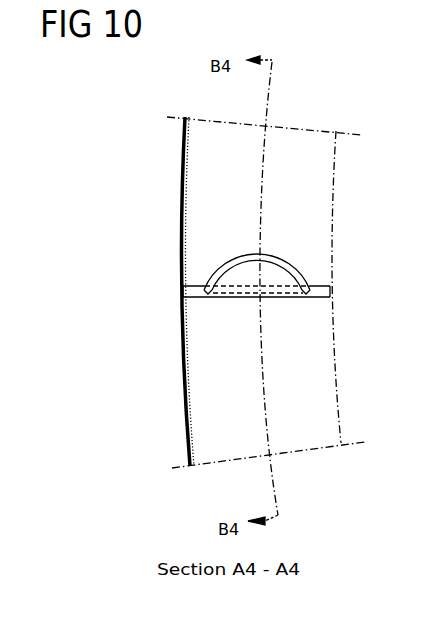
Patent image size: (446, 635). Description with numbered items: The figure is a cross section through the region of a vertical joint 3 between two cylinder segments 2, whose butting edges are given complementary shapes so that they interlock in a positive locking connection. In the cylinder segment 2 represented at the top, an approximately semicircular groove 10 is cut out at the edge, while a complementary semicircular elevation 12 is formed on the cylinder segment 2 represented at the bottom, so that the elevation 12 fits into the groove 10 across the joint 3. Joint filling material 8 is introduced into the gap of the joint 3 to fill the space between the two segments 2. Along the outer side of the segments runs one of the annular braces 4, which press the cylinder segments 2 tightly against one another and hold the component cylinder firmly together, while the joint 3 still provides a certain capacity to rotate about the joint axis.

The cylinder segment 2 is at (223, 167).
The joint 3 is at (332, 288).
The annular brace 4 is at (181, 366).
The joint filling material 8 is at (216, 273).
The semicircular groove 10 is at (291, 262).
The semicircular elevation 12 is at (242, 268).